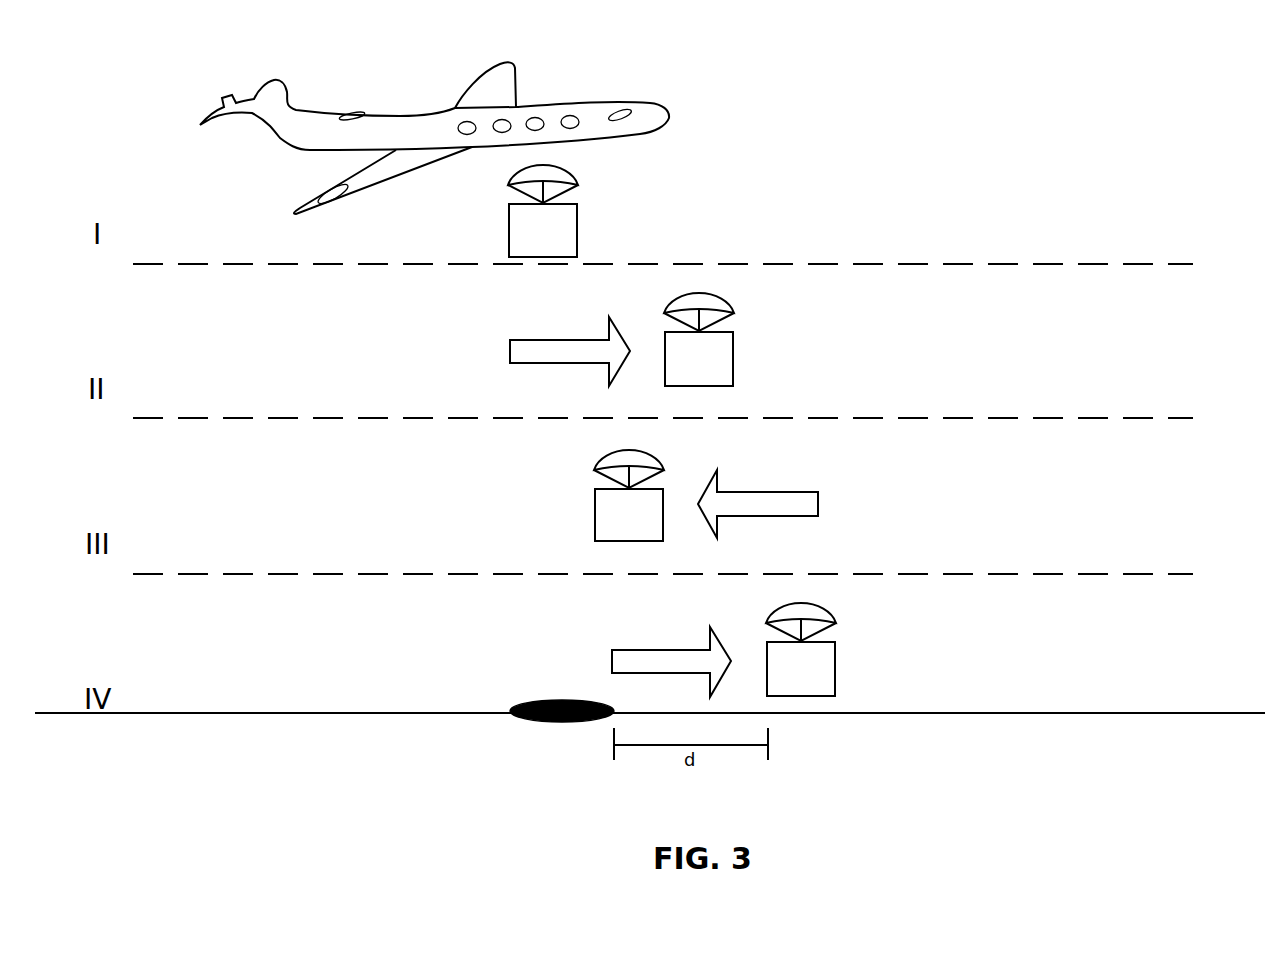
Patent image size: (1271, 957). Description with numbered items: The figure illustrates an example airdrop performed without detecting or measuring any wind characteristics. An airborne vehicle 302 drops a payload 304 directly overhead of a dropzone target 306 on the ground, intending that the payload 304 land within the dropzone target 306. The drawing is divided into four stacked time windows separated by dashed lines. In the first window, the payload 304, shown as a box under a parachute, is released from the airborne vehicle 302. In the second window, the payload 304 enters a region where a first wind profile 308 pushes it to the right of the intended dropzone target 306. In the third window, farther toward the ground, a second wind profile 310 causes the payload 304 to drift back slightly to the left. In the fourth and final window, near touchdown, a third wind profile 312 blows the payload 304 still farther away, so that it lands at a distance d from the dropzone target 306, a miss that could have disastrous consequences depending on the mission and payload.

The airborne vehicle 302 is at (654, 110).
The payload 304 is at (578, 226).
The dropzone target 306 is at (520, 722).
The first wind profile 308 is at (520, 340).
The second wind profile 310 is at (802, 492).
The third wind profile 312 is at (630, 650).